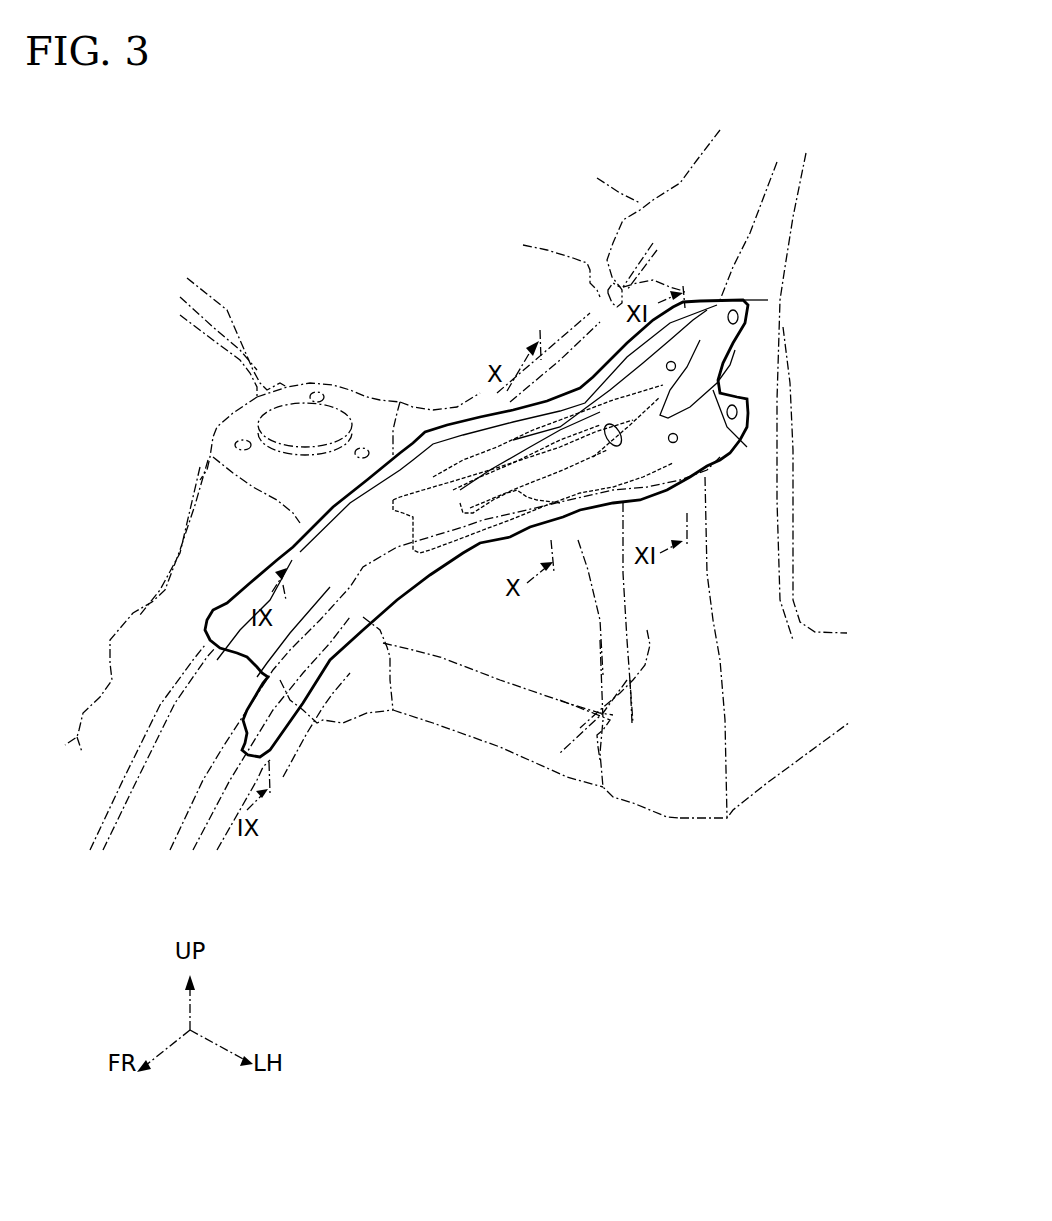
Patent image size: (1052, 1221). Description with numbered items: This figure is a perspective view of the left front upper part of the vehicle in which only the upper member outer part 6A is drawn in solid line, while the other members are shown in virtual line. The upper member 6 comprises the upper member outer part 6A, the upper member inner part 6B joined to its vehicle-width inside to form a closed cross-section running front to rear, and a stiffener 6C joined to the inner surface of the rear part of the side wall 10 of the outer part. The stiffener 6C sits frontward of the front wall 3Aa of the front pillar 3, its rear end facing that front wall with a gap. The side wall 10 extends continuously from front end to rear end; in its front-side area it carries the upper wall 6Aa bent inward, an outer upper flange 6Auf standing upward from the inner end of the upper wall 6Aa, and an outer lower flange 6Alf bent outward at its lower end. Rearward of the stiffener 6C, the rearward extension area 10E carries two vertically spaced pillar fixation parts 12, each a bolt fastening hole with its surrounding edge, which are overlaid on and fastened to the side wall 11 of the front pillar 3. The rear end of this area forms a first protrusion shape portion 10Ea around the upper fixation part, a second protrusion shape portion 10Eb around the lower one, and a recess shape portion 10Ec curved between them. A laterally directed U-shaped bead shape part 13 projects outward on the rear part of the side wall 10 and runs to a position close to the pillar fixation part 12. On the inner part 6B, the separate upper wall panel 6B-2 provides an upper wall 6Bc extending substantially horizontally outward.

The front pillar 3 is at (706, 637).
The front wall 3Aa is at (603, 675).
The upper member 6 is at (444, 575).
The upper member outer part 6A is at (317, 727).
The upper wall 6Aa is at (357, 517).
The outer upper flange 6Auf is at (307, 527).
The outer lower flange 6Alf is at (380, 637).
The upper member inner part 6B is at (190, 663).
The upper wall panel 6B-2 is at (553, 327).
The upper wall 6Bc is at (600, 352).
The stiffener 6C is at (650, 455).
The side wall 10 is at (447, 513).
The rearward extension area 10E is at (697, 352).
The first protrusion shape portion 10Ea is at (750, 310).
The second protrusion shape portion 10Eb is at (748, 403).
The recess shape portion 10Ec is at (720, 378).
The side wall 11 is at (768, 300).
The pillar fixation part 12 is at (733, 310).
The bead shape part 13 is at (710, 430).